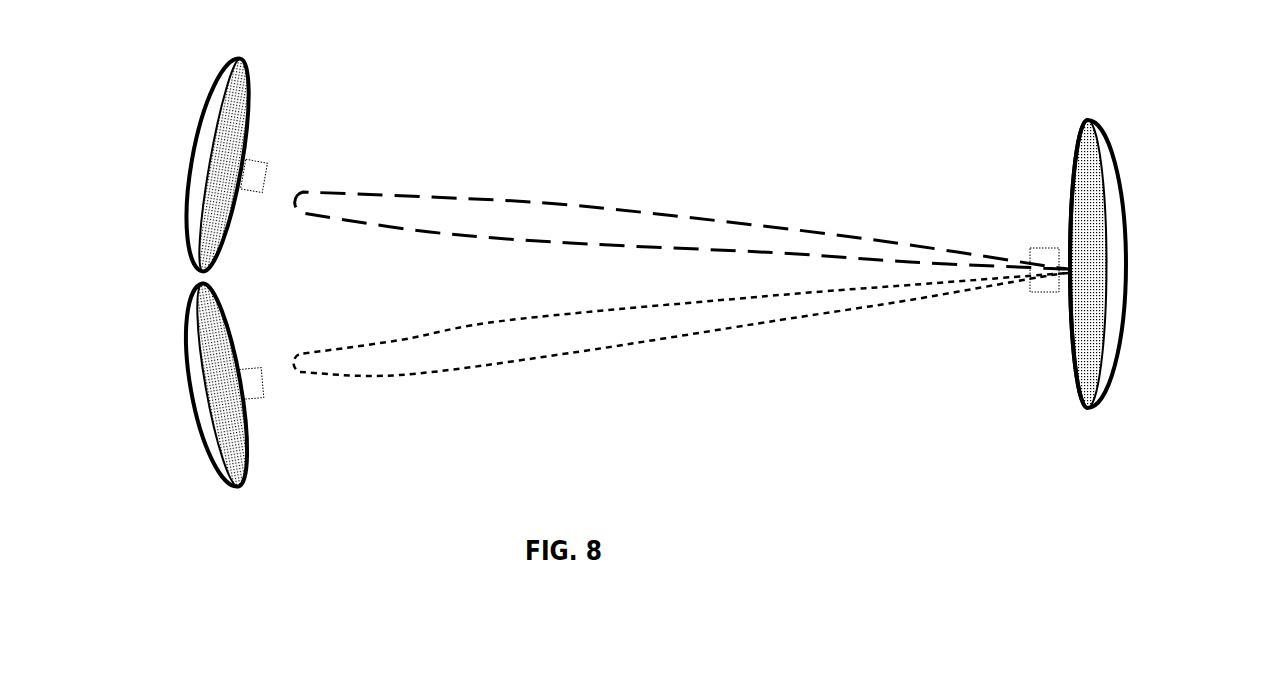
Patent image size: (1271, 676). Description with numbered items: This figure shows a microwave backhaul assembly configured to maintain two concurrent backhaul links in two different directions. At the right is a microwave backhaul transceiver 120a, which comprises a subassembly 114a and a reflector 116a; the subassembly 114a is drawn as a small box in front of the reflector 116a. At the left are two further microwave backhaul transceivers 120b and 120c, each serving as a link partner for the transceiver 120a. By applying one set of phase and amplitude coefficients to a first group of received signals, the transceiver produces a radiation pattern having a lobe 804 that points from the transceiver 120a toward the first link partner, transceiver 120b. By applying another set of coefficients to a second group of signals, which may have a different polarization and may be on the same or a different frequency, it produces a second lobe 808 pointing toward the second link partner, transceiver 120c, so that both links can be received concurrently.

The microwave backhaul transceiver 120a is at (1170, 170).
The microwave backhaul transceiver 120b is at (164, 150).
The microwave backhaul transceiver 120c is at (144, 320).
The subassembly 114a is at (1032, 248).
The reflector 116a is at (1097, 111).
The lobe 804 is at (427, 232).
The lobe 808 is at (490, 362).